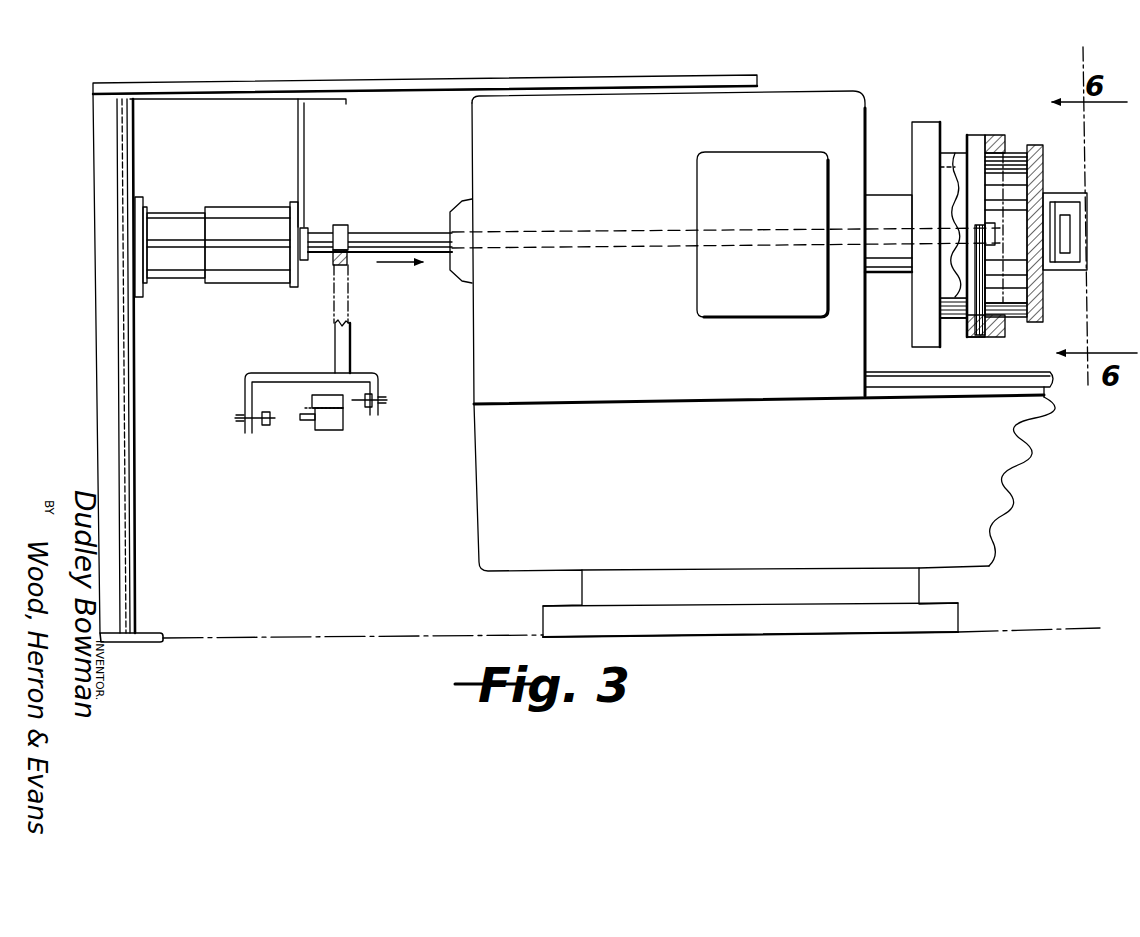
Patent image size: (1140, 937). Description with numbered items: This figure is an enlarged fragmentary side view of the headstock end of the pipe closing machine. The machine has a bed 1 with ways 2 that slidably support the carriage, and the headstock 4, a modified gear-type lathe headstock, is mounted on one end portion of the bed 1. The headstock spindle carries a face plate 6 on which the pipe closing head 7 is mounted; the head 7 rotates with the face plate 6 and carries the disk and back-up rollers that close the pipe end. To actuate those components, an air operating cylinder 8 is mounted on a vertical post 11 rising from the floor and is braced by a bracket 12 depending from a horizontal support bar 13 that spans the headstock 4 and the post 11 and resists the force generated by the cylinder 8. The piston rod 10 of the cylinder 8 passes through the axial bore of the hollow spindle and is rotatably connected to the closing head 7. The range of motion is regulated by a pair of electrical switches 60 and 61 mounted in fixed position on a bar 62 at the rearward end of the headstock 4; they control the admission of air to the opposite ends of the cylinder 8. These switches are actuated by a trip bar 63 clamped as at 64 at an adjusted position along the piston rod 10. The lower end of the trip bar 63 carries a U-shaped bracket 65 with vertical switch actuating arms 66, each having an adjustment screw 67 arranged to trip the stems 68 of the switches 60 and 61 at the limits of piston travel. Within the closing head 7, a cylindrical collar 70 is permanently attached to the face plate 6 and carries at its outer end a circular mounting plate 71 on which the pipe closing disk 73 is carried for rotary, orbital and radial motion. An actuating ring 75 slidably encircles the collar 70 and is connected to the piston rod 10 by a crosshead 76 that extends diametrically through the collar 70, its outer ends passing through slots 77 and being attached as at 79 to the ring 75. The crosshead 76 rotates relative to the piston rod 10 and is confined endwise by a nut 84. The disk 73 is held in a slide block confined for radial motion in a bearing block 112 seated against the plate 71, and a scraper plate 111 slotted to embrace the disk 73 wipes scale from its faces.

The bed 1 is at (514, 489).
The ways 2 is at (890, 388).
The headstock 4 is at (781, 108).
The face plate 6 is at (920, 130).
The pipe closing head 7 is at (1006, 128).
The operating cylinder 8 is at (243, 205).
The piston rod 10 is at (415, 236).
The vertical post 11 is at (96, 347).
The bracket 12 is at (306, 130).
The horizontal support bar 13 is at (425, 80).
The electrical switch 60 is at (322, 395).
The electrical switch 61 is at (338, 430).
The bar 62 is at (315, 422).
The trip bar 63 is at (350, 262).
The clamp 64 is at (343, 225).
The U-shaped bracket 65 is at (270, 373).
The switch actuating arm 66 is at (245, 392).
The adjustment screw 67 is at (240, 420).
The switch stem 68 is at (360, 380).
The cylindrical collar 70 is at (950, 160).
The circular mounting plate 71 is at (1035, 317).
The pipe closing disk 73 is at (1072, 235).
The actuating ring 75 is at (985, 336).
The crosshead 76 is at (976, 140).
The slot 77 is at (1031, 150).
The attachment 79 is at (994, 140).
The nut 84 is at (992, 246).
The scraper plate 111 is at (1070, 210).
The bearing block 112 is at (1070, 195).